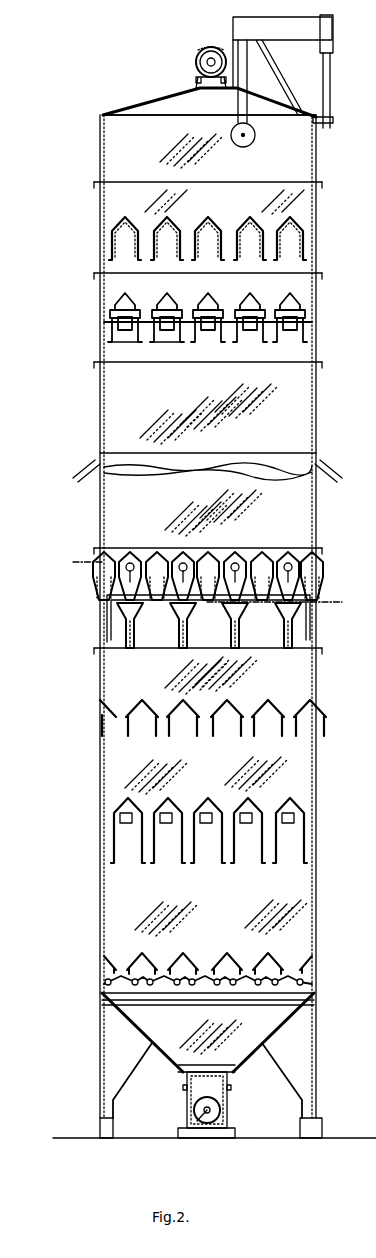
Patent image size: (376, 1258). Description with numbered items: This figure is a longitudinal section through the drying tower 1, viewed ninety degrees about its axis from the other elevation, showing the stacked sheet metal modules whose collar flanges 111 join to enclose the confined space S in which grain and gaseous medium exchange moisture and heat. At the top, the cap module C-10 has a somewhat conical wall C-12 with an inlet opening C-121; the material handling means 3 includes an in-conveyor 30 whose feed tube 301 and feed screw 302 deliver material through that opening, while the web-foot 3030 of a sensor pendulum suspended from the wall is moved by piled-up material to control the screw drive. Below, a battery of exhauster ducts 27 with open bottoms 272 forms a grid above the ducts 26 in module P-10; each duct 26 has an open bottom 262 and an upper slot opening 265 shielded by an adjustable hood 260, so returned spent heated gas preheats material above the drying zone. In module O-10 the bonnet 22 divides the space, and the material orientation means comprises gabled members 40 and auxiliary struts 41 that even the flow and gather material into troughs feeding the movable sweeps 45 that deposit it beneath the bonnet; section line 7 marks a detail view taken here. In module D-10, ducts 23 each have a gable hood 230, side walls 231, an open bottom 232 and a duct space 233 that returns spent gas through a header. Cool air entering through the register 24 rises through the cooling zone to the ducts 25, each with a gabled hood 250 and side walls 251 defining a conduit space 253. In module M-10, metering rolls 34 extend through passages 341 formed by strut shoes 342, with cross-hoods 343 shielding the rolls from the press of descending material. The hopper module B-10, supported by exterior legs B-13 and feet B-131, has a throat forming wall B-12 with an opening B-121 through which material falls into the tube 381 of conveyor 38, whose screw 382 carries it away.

The tower 1 is at (96, 220).
The material handling means 3 is at (175, 593).
The in-conveyor 30 is at (212, 44).
The feed tube 301 is at (197, 52).
The feed screw 302 is at (206, 62).
The web-foot 3030 is at (243, 135).
The cap module C-10 is at (96, 137).
The conical radially extending wall C-12 is at (120, 108).
The inlet opening C-121 is at (196, 83).
The exhauster ducts 27 is at (243, 225).
The open bottoms 272 is at (214, 240).
The ducts 26 is at (195, 291).
The upper slot opening 265 is at (140, 291).
The hood 260 is at (210, 302).
The open bottom 262 is at (155, 343).
The module P-10 is at (188, 316).
The confined space S is at (138, 431).
The collar flanges 111 is at (208, 477).
The members 40 is at (150, 548).
The auxiliary struts 41 is at (127, 549).
The section line 7 is at (73, 562).
The module O-10 is at (171, 586).
The bonnet 22 is at (122, 625).
The movable sweeps 45 is at (281, 630).
The module D-10 is at (189, 787).
The ducts 23 is at (229, 722).
The gable hood 230 is at (269, 713).
The side walls 231 is at (168, 731).
The open bottom 232 is at (228, 738).
The duct space 233 is at (270, 725).
The ducts 25 is at (233, 839).
The gabled hood 250 is at (255, 814).
The side walls 251 is at (260, 855).
The conduit space 253 is at (167, 860).
The module M-10 is at (190, 958).
The metering rolls 34 is at (232, 958).
The passages 341 is at (287, 970).
The strut shoes 342 is at (217, 970).
The cross-hoods 343 is at (135, 967).
The register 24 is at (157, 1015).
The hopper module B-10 is at (200, 1065).
The exterior legs B-13 is at (200, 1090).
The feet B-131 is at (106, 1128).
The throat forming wall B-12 is at (207, 1105).
The opening B-121 is at (229, 1092).
The conveyor 38 is at (207, 1111).
The tube 381 is at (185, 1098).
The screw 382 is at (194, 1112).